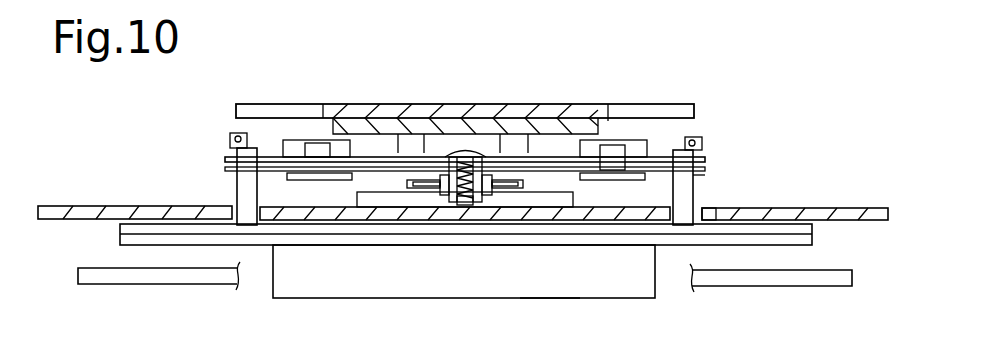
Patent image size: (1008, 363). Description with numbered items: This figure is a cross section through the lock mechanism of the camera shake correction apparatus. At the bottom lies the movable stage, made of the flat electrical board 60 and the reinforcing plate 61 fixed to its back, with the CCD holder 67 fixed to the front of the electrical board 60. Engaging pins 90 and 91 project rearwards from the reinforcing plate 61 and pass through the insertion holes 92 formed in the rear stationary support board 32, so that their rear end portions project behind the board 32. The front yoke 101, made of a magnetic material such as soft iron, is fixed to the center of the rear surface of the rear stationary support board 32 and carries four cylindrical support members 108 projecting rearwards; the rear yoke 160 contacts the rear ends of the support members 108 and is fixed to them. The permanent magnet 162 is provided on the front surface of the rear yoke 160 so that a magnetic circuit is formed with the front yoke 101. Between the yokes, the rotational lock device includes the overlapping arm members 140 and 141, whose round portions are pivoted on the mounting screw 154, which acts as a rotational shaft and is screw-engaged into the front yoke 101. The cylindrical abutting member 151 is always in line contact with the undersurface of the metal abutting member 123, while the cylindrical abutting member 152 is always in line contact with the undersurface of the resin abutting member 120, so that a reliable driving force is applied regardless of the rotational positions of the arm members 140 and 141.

The rear yoke 160 is at (676, 110).
The permanent magnet 162 is at (558, 118).
The cylindrical support members 108 is at (412, 145).
The arm member 140 is at (363, 157).
The abutting member 123 is at (292, 142).
The cylindrical abutting member 151 is at (317, 147).
The abutting member 120 is at (637, 148).
The cylindrical abutting member 152 is at (612, 148).
The mounting screw (rotational shaft) 154 is at (463, 150).
The front yoke 101 is at (503, 203).
The arm member 141 is at (358, 192).
The engaging pin 90 is at (230, 173).
The engaging pin 91 is at (690, 178).
The insertion holes 92 is at (232, 208).
The rear stationary support board 32 is at (798, 208).
The reinforcing plate 61 is at (668, 232).
The electrical board 60 is at (623, 243).
The CCD holder 67 is at (547, 285).